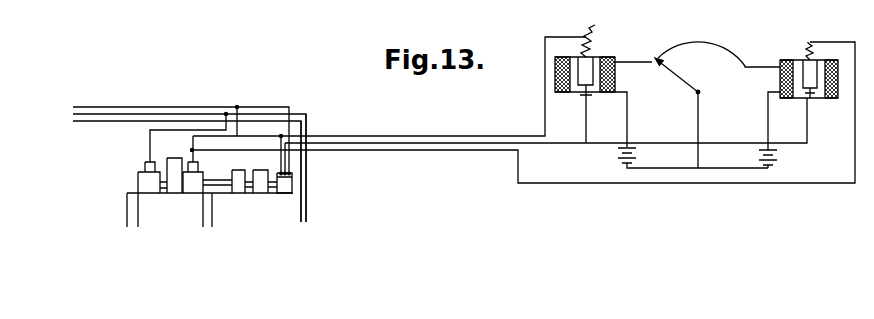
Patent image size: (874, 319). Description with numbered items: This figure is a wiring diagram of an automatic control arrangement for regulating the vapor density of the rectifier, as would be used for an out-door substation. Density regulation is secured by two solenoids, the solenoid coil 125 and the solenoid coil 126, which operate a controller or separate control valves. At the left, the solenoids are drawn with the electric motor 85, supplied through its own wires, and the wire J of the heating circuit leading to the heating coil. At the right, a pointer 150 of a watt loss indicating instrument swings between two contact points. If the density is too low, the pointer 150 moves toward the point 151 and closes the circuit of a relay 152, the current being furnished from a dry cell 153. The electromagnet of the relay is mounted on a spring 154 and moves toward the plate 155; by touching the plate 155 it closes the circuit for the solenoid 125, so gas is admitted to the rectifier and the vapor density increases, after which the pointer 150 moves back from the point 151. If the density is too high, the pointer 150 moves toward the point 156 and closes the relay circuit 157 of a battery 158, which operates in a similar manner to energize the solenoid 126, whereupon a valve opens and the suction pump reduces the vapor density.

The solenoid coil 125 is at (145, 166).
The solenoid coil 126 is at (198, 165).
The electric motor 85 is at (283, 193).
The wire J is at (307, 191).
The pointer 150 is at (677, 113).
The point 151 is at (648, 60).
The relay 152 is at (606, 58).
The dry cell 153 is at (619, 158).
The spring 154 is at (612, 27).
The plate 155 is at (587, 94).
The point 156 is at (745, 65).
The relay circuit 157 is at (768, 123).
The battery 158 is at (778, 163).